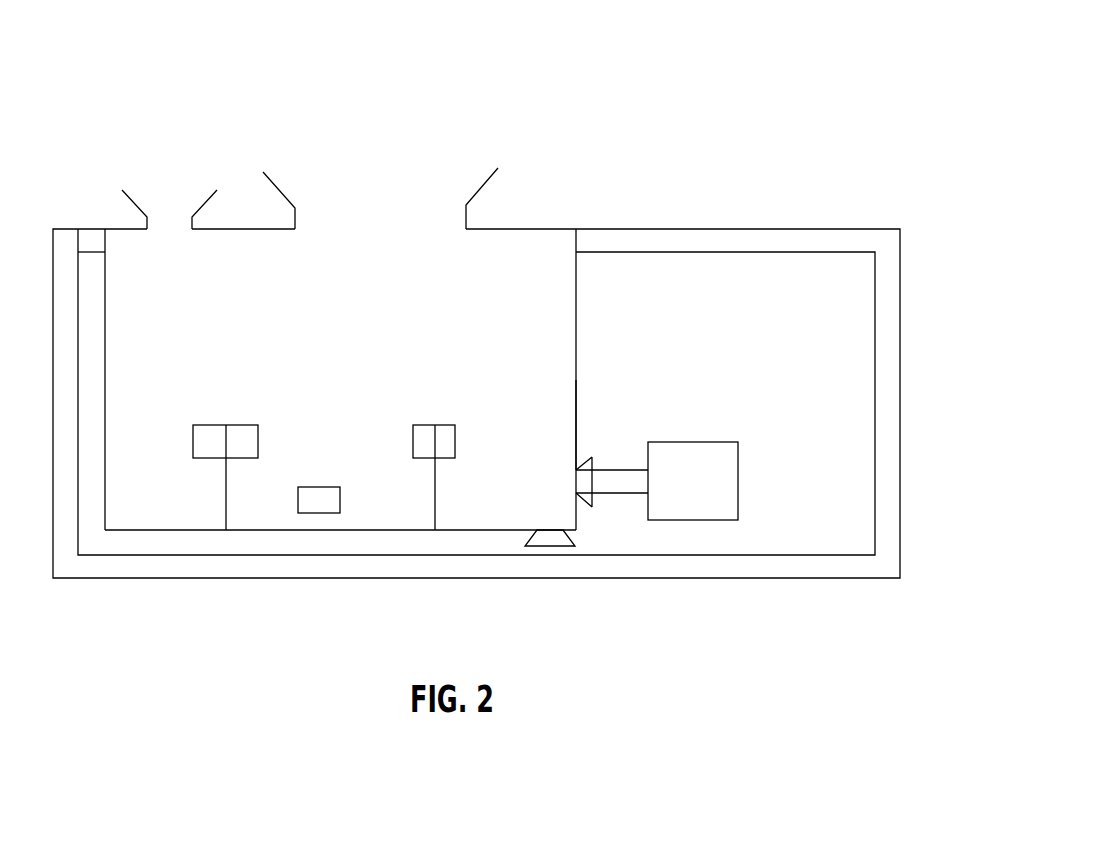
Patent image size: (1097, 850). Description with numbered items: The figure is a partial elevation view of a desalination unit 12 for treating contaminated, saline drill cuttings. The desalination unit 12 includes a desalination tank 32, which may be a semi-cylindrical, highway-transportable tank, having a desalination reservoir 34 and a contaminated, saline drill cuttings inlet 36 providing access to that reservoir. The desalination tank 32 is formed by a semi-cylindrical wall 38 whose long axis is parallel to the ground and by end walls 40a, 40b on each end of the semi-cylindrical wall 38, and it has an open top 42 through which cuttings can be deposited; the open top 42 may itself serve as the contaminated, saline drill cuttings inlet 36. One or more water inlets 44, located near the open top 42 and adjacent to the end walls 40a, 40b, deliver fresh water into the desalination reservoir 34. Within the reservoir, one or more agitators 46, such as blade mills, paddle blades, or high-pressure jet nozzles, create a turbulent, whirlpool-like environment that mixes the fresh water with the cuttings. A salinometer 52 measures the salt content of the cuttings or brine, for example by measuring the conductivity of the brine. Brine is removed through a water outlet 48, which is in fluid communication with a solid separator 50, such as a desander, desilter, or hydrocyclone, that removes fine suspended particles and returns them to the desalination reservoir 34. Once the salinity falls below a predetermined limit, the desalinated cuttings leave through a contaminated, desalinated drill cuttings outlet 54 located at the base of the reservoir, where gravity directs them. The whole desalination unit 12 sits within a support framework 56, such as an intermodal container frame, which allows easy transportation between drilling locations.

The desalination unit 12 is at (790, 48).
The desalination tank 32 is at (542, 225).
The desalination reservoir 34 is at (525, 348).
The contaminated, saline drill cuttings inlet 36 is at (380, 235).
The semi-cylindrical wall 38 is at (473, 533).
The end wall 40a is at (525, 425).
The end wall 40b is at (105, 368).
The open top 42 is at (310, 143).
The water inlet 44 is at (169, 197).
The agitator 46 is at (228, 483).
The water outlet 48 is at (587, 498).
The solid separator 50 is at (693, 481).
The salinometer 52 is at (330, 485).
The contaminated, desalinated drill cuttings outlet 54 is at (545, 547).
The support framework 56 is at (890, 330).